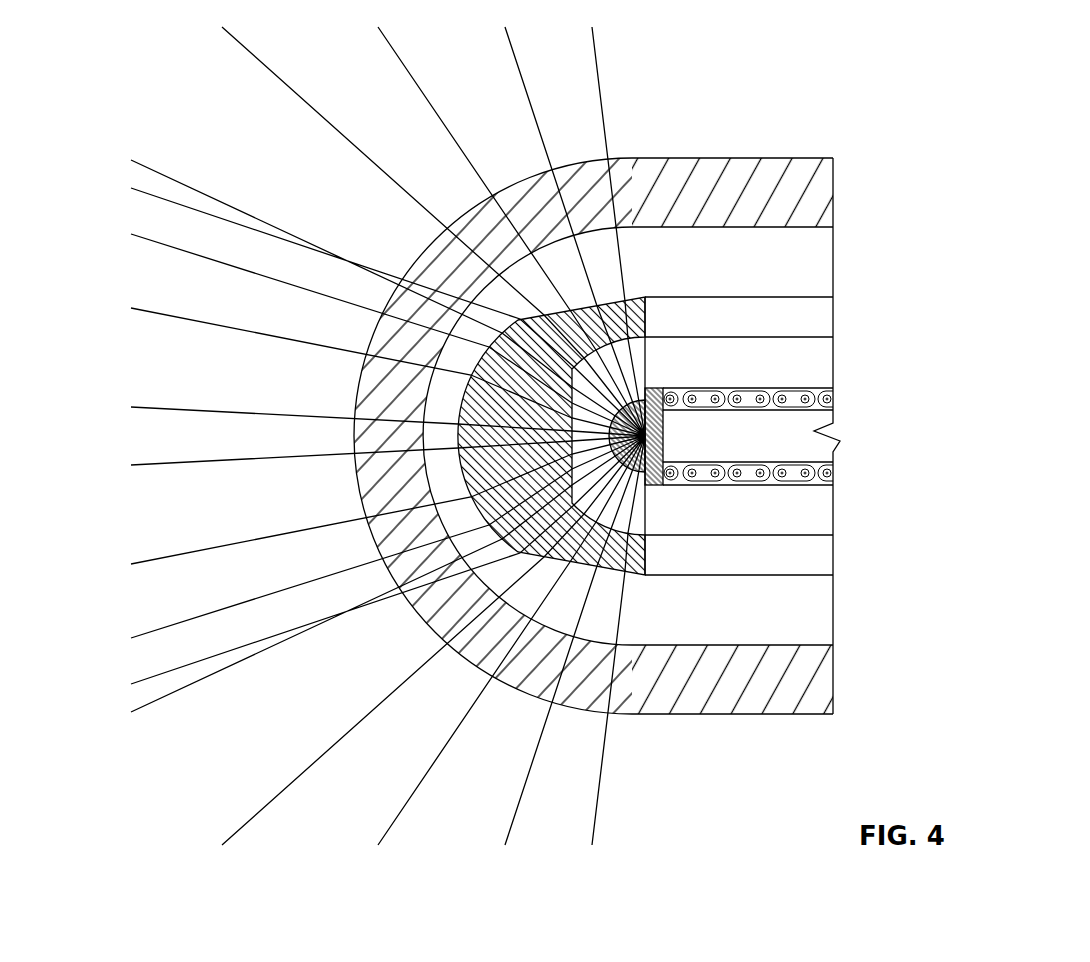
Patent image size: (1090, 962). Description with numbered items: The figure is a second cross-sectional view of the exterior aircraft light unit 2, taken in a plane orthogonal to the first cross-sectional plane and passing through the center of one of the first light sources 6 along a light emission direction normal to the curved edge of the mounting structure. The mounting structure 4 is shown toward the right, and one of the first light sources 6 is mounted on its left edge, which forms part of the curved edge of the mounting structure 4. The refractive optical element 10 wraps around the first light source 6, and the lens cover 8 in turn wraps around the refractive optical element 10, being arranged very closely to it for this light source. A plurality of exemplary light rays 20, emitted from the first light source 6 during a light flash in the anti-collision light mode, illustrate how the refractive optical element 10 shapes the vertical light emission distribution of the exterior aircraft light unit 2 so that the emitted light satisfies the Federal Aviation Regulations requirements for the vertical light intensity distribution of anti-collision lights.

The exterior aircraft light unit 2 is at (609, 390).
The mounting structure 4 is at (805, 387).
The first light source 6 is at (654, 388).
The lens cover 8 is at (758, 714).
The refractive optical element 10 is at (613, 296).
The light rays 20 is at (285, 796).